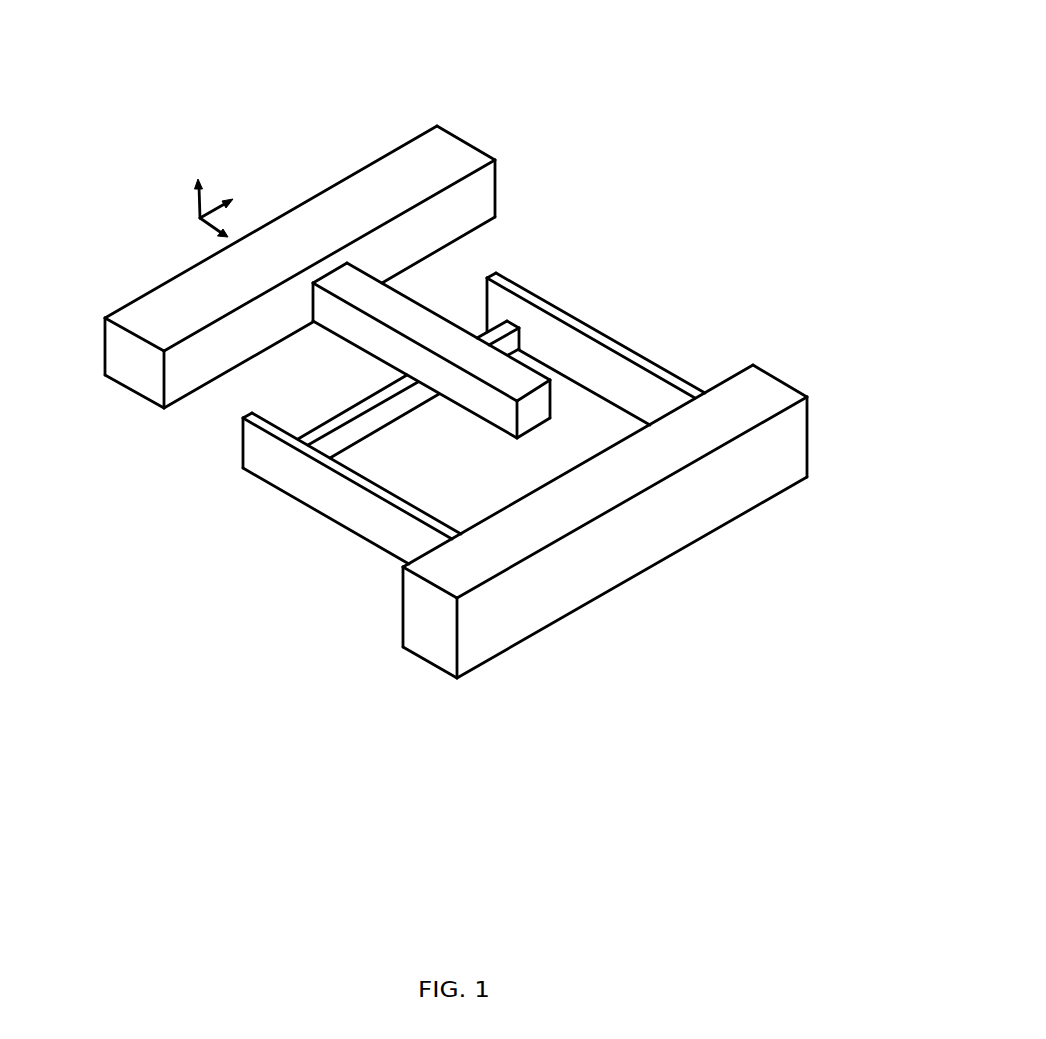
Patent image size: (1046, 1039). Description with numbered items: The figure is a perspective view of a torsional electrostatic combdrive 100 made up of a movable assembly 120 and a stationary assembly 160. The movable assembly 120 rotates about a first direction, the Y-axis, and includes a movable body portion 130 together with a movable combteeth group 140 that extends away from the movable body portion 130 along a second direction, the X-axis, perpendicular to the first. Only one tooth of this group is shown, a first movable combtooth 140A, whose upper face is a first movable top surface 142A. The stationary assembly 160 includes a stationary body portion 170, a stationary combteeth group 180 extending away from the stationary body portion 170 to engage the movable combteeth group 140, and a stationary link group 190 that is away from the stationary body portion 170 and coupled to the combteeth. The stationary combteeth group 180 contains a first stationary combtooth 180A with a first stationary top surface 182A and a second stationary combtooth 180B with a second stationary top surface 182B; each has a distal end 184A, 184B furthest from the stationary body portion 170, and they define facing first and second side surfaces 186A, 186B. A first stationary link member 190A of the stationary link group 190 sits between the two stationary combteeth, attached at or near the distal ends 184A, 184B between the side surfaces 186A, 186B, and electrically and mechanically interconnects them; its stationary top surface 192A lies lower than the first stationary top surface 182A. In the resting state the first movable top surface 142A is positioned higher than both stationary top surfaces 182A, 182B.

The torsional electrostatic combdrive 100 is at (680, 112).
The movable assembly 120 is at (529, 154).
The movable body portion 130 is at (140, 370).
The movable combteeth group 140 is at (442, 297).
The first movable combtooth 140A is at (465, 388).
The first movable top surface 142A is at (512, 379).
The stationary assembly 160 is at (714, 295).
The stationary body portion 170 is at (437, 618).
The stationary combteeth group 180 is at (256, 495).
The first stationary combtooth 180A is at (600, 366).
The second stationary combtooth 180B is at (310, 482).
The first stationary top surface 182A is at (545, 308).
The second stationary top surface 182B is at (383, 497).
The distal end 184A is at (500, 264).
The distal end 184B is at (227, 444).
The first side surface 186A is at (587, 358).
The second side surface 186B is at (434, 498).
The stationary link group 190 is at (372, 380).
The first stationary link member 190A is at (410, 400).
The stationary top surface 192A is at (368, 402).